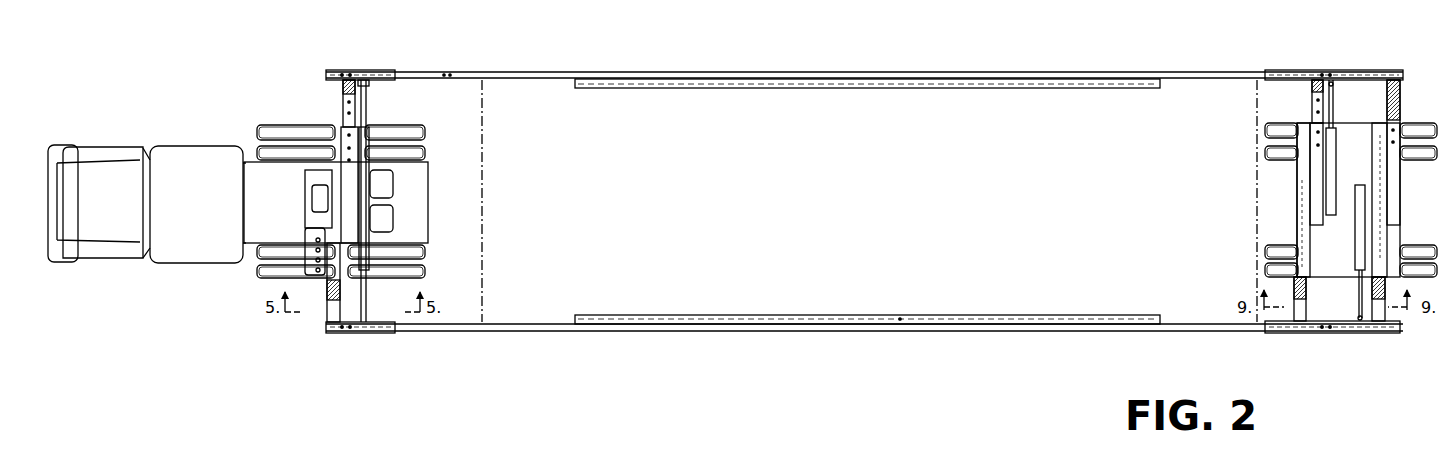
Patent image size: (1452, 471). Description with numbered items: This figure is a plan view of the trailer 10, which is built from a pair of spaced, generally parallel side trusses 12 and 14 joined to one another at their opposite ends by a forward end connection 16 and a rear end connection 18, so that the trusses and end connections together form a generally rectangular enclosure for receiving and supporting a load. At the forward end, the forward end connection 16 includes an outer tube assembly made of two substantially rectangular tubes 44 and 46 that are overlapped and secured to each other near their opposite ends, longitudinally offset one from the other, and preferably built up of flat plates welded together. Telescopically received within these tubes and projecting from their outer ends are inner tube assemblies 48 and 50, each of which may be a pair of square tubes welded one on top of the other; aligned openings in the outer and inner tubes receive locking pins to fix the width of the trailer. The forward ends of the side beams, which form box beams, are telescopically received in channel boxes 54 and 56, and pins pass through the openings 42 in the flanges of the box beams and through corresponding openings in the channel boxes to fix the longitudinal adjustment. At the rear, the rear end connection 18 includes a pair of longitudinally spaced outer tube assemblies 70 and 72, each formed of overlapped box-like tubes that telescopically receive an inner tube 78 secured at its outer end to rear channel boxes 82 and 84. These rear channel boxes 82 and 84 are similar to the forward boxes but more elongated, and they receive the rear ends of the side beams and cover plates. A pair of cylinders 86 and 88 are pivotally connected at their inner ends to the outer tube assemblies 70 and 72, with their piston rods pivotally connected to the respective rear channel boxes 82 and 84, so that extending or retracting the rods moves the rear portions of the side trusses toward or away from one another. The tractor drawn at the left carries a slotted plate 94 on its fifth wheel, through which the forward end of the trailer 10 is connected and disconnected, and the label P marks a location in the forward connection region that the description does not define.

The trailer 10 is at (744, 46).
The side truss 12 is at (710, 71).
The side truss 14 is at (727, 331).
The forward end connection 16 is at (330, 121).
The rear end connection 18 is at (1272, 171).
The openings 42 is at (450, 71).
The rectangular tube 44 is at (318, 176).
The rectangular tube 46 is at (305, 232).
The inner tube assembly 48 is at (343, 105).
The inner tube assembly 50 is at (330, 322).
The channel box 54 is at (383, 70).
The channel box 56 is at (385, 334).
The outer tube assembly 70 is at (1297, 185).
The outer tube assembly 72 is at (1400, 201).
The inner tube 78 is at (1312, 101).
The rear channel box 82 is at (1385, 58).
The rear channel box 84 is at (1350, 334).
The cylinder 86 is at (1336, 150).
The cylinder 88 is at (1356, 241).
The slotted plate 94 is at (393, 212).
The pad P is at (312, 200).